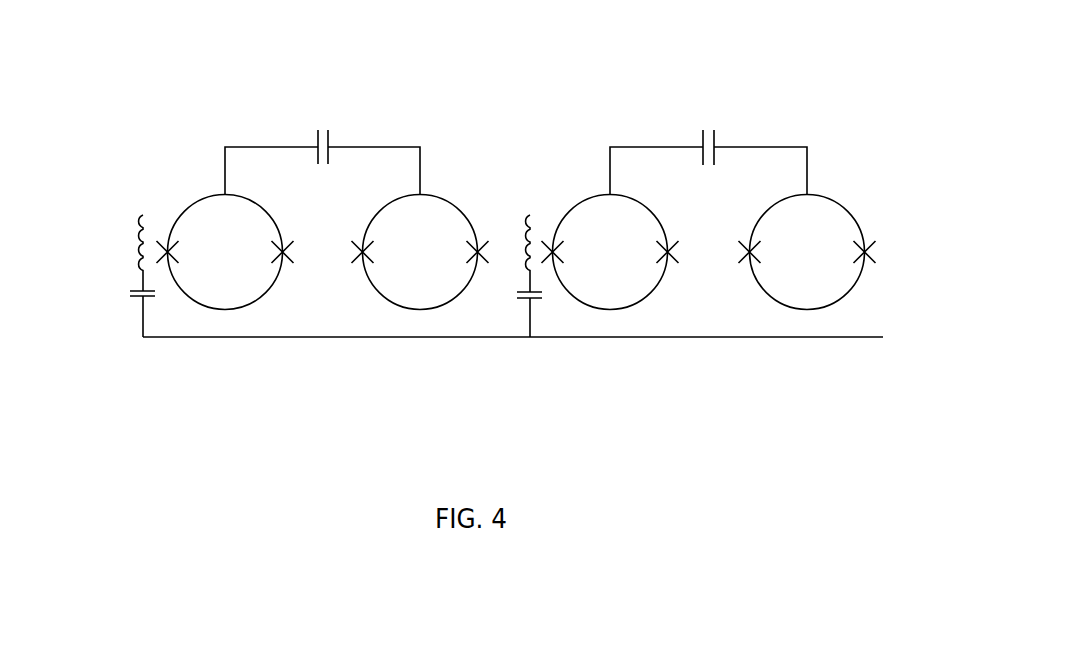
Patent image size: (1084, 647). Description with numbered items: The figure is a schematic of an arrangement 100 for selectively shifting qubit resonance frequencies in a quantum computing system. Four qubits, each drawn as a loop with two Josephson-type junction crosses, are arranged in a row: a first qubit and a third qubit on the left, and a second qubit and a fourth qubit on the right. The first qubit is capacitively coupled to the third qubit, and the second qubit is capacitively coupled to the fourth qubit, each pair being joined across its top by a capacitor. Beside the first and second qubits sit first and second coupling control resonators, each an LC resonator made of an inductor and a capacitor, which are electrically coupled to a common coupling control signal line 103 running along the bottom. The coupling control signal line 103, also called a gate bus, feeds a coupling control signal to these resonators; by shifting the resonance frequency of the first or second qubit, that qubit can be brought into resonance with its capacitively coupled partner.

The arrangement for selectively shifting qubit resonance frequencies 100 is at (134, 92).
The coupling control signal line 103 is at (847, 337).